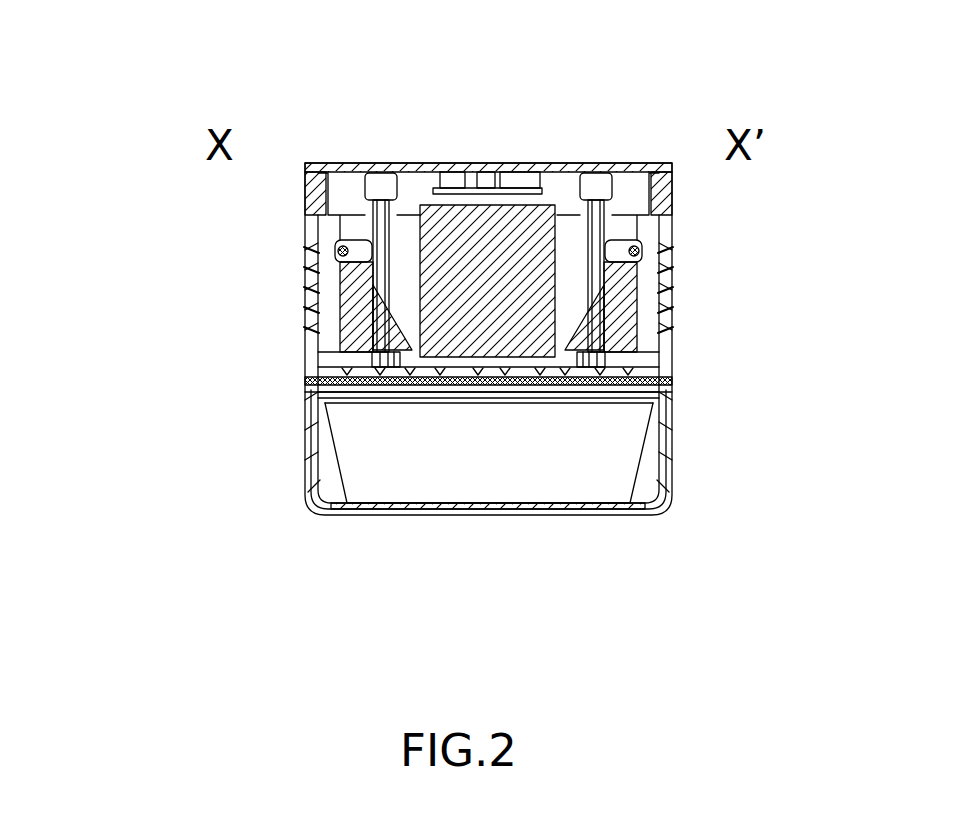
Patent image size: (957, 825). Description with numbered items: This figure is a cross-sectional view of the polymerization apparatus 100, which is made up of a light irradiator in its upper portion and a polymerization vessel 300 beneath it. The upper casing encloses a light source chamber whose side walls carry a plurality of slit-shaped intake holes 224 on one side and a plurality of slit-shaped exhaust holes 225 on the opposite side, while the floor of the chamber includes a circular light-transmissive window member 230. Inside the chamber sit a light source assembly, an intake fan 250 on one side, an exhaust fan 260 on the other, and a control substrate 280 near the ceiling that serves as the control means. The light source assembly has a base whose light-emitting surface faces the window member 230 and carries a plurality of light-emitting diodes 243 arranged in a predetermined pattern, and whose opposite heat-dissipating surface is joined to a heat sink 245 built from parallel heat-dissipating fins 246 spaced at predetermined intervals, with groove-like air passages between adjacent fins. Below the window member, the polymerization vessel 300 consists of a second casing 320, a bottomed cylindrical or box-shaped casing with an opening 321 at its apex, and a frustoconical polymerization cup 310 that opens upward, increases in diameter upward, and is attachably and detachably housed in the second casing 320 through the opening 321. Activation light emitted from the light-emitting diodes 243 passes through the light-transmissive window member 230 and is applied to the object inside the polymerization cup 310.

The polymerization apparatus 100 is at (512, 647).
The slit-shaped intake holes 224 is at (303, 292).
The slit-shaped exhaust holes 225 is at (674, 280).
The light-transmissive window member 230 is at (400, 390).
The light-emitting diodes 243 is at (597, 382).
The heat sink 245 is at (427, 203).
The heat-dissipating fins 246 is at (470, 248).
The intake fan 250 is at (353, 275).
The exhaust fan 260 is at (627, 303).
The control substrate 280 is at (511, 188).
The polymerization vessel 300 is at (349, 453).
The polymerization cup 310 is at (445, 476).
The second casing 320 is at (302, 462).
The opening 321 is at (521, 402).